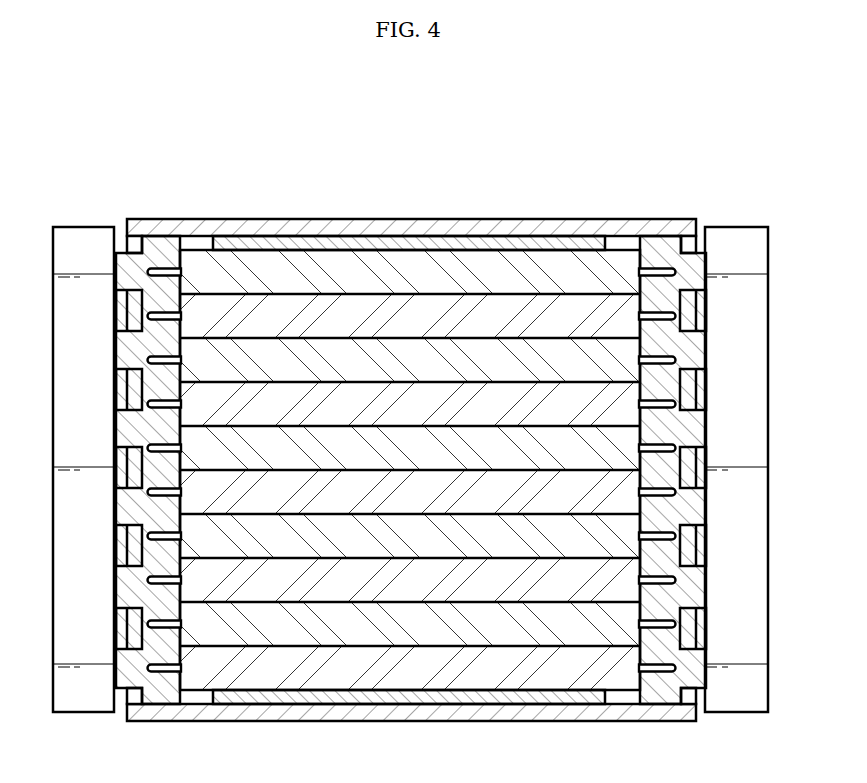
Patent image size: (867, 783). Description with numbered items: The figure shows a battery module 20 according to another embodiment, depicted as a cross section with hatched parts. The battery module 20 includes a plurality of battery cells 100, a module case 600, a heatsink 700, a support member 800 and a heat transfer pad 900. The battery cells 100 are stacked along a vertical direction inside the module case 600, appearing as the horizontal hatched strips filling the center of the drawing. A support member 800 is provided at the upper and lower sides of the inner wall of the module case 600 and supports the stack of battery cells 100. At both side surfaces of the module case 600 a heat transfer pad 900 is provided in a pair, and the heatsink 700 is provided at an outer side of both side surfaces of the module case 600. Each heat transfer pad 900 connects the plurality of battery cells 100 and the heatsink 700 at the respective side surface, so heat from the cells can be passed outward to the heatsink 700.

The battery module 20 is at (171, 140).
The battery cells 100 is at (398, 265).
The module case 600 is at (460, 219).
The heatsink 700 is at (83, 227).
The support member 800 is at (330, 246).
The heat transfer pad 900 is at (148, 238).